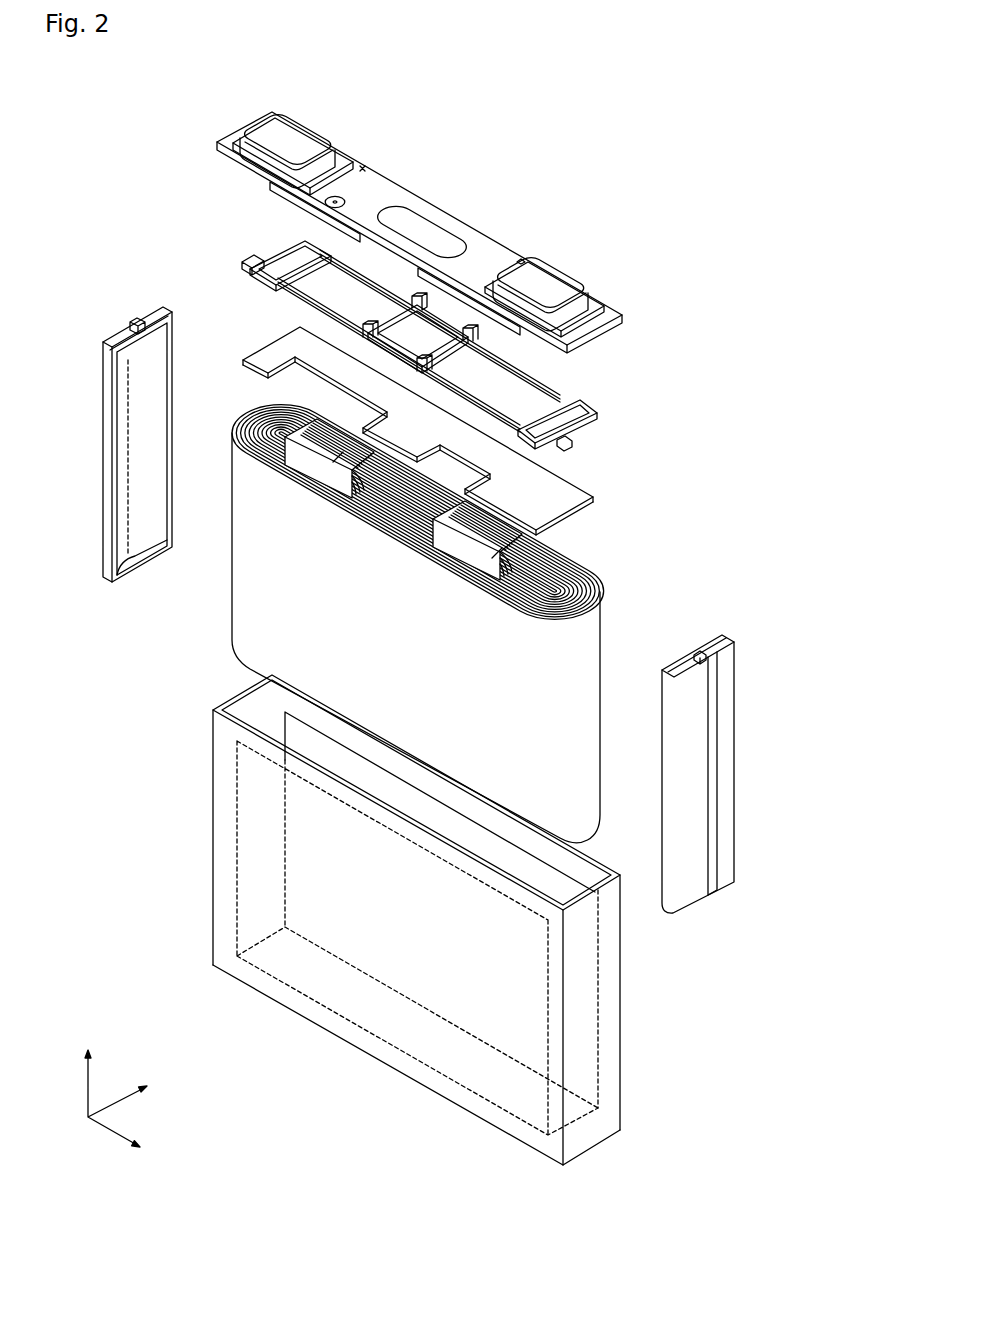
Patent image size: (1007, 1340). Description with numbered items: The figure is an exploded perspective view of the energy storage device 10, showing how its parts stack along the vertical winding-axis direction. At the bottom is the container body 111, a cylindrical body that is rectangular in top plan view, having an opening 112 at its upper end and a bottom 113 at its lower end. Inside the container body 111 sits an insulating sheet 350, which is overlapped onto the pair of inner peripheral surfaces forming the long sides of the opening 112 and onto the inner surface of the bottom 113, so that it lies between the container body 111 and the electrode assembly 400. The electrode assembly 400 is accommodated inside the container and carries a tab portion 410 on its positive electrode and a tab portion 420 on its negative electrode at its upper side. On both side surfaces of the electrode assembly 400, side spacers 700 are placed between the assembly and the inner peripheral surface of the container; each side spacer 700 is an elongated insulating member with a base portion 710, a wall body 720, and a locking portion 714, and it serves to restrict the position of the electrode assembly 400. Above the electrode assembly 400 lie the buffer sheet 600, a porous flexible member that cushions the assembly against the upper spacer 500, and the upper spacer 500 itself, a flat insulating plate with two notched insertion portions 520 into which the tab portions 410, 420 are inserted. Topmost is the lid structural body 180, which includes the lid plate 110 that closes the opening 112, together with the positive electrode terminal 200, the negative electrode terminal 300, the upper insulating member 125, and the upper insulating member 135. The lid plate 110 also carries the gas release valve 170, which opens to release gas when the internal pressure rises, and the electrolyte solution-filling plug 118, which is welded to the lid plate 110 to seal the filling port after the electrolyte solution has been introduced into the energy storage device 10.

The energy storage device 10 is at (655, 116).
The lid plate 110 is at (607, 315).
The container body 111 is at (213, 822).
The opening 112 is at (593, 856).
The bottom 113 is at (449, 1100).
The electrolyte solution-filling plug 118 is at (343, 200).
The upper insulating member 125 is at (337, 158).
The upper insulating member 135 is at (530, 267).
The gas release valve 170 is at (420, 230).
The lid structural body 180 is at (630, 272).
The positive electrode terminal 200 is at (290, 132).
The negative electrode terminal 300 is at (553, 288).
The insulating sheet 350 is at (303, 734).
The electrode assembly 400 is at (592, 627).
The tab portion 410 is at (336, 456).
The tab portion 420 is at (500, 552).
The upper spacer 500 is at (543, 395).
The insertion portion 520 is at (300, 299).
The buffer sheet 600 is at (560, 488).
The side spacer 700 is at (120, 300).
The base portion 710 is at (167, 333).
The locking portion 714 is at (138, 318).
The wall body 720 is at (102, 378).